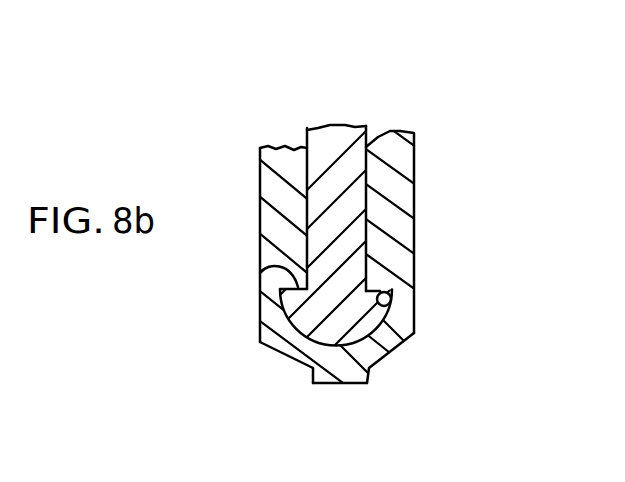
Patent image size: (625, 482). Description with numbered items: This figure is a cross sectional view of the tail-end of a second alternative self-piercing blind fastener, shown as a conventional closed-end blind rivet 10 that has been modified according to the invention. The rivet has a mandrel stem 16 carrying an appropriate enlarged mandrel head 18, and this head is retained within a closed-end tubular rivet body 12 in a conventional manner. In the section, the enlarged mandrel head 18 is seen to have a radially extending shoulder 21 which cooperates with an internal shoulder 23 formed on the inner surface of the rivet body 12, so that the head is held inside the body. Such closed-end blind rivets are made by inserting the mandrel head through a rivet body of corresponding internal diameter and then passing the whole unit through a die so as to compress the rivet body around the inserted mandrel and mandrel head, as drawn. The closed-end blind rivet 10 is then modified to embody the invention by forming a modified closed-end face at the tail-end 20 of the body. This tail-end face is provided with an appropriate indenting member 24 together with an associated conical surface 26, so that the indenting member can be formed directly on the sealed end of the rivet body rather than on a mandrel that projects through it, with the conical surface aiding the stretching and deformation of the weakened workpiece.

The closed-end blind rivet 10 is at (441, 121).
The closed-end tubular rivet body 12 is at (400, 213).
The mandrel stem 16 is at (332, 143).
The enlarged mandrel head 18 is at (372, 327).
The tail-end 20 is at (244, 337).
The radially extending shoulder 21 is at (261, 273).
The internal shoulder 23 is at (391, 295).
The indenting member 24 is at (355, 386).
The conical surface 26 is at (296, 361).